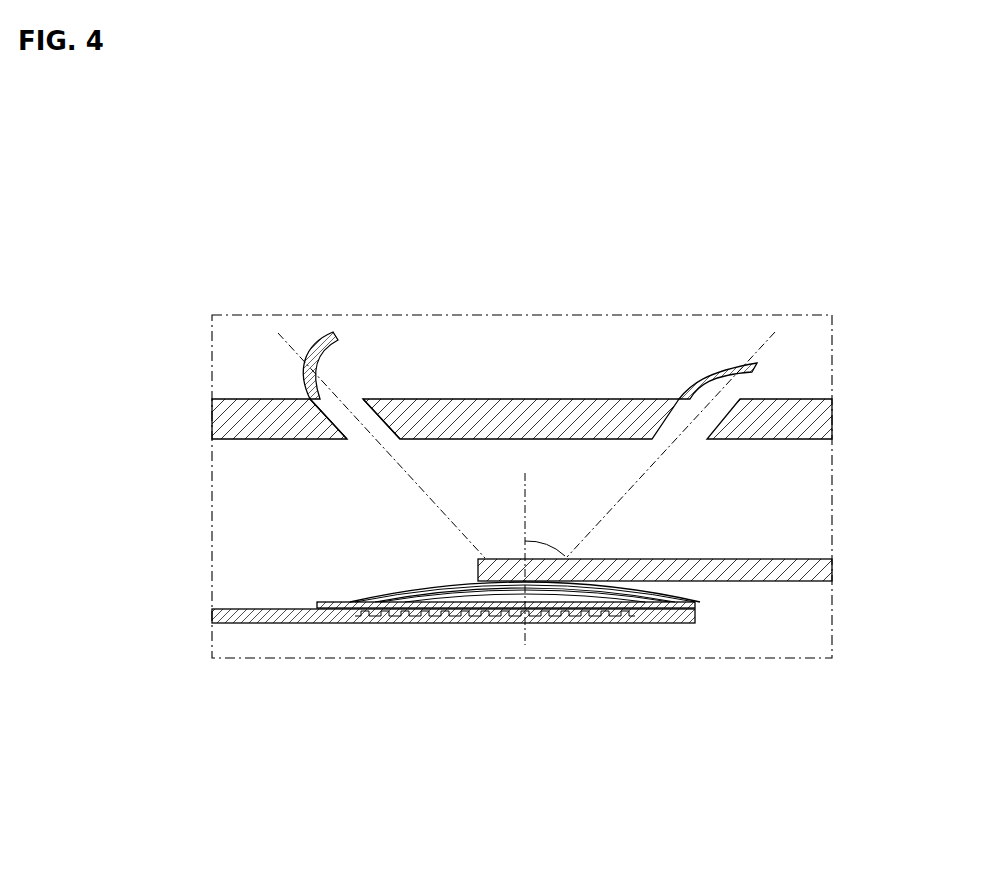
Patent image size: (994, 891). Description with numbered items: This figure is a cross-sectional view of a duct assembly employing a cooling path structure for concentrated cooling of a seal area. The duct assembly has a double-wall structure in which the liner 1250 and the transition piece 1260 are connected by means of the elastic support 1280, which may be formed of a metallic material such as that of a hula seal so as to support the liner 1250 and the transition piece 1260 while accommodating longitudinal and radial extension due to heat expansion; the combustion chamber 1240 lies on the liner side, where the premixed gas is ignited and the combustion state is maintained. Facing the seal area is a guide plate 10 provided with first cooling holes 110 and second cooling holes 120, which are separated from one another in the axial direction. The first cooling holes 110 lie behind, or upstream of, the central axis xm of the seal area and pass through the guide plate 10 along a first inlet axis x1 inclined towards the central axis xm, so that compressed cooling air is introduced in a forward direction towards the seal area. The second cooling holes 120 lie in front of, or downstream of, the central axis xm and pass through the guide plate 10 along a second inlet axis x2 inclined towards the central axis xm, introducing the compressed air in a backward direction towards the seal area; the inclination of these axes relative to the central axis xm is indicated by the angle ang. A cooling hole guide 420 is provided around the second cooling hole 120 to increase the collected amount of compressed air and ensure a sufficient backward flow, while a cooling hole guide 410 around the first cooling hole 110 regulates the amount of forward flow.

The guide plate 10 is at (520, 398).
The first cooling holes 110 is at (698, 433).
The second cooling holes 120 is at (357, 397).
The cooling hole guide 410 is at (707, 368).
The cooling hole guide 420 is at (312, 343).
The combustion chamber 1240 is at (357, 643).
The liner 1250 is at (272, 623).
The transition piece 1260 is at (768, 581).
The elastic support 1280 is at (430, 583).
The first inlet axis x1 is at (760, 348).
The second inlet axis x2 is at (297, 352).
The central axis xm is at (525, 632).
The angle ang is at (550, 534).